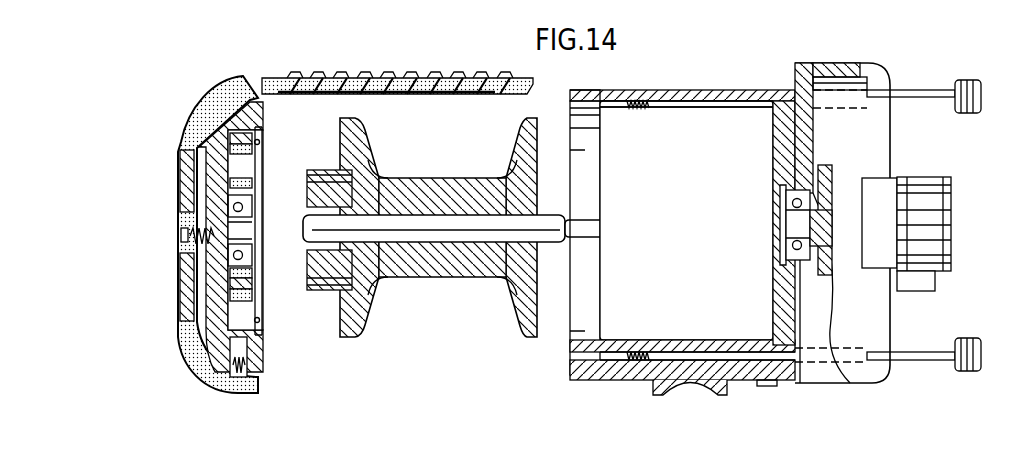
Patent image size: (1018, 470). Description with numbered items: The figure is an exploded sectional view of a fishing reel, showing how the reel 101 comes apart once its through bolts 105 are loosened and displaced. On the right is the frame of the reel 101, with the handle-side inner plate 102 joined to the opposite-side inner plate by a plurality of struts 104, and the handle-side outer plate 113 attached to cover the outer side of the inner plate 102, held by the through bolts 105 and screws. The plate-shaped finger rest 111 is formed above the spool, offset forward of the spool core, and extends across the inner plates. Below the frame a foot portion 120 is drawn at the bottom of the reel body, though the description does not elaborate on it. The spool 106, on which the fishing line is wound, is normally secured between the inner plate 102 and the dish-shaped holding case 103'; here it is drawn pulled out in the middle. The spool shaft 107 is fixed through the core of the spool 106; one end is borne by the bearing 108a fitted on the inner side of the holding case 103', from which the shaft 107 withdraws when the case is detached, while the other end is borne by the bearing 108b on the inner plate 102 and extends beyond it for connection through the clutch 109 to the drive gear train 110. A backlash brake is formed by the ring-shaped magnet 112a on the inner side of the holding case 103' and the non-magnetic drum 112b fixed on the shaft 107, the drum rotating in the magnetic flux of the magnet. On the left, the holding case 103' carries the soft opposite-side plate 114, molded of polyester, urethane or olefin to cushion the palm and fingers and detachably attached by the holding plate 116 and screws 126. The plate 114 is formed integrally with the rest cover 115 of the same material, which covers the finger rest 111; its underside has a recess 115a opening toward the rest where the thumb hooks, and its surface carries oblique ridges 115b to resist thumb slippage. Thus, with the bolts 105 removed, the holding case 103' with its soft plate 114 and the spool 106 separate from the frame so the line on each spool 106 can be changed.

The reel 101 is at (695, 91).
The handle-side inner plate 102 is at (795, 146).
The dish-shaped holding case 103' is at (183, 239).
The struts 104 is at (764, 380).
The through bolts 105 is at (708, 110).
The spool 106 is at (463, 260).
The spool shaft 107 is at (411, 232).
The bearing 108a is at (240, 257).
The bearing 108b is at (790, 205).
The clutch 109 is at (794, 240).
The drive gear train 110 is at (836, 200).
The finger rest 111 is at (632, 90).
The magnet 112a is at (257, 329).
The non-magnetic drum 112b is at (312, 168).
The handle-side outer plate 113 is at (848, 187).
The opposite-side plate 114 is at (193, 124).
The rest cover 115 is at (397, 74).
The recess 115a is at (430, 96).
The oblique ridges 115b is at (296, 74).
The holding plate 116 is at (182, 168).
The foot 120 is at (690, 383).
The screws 126 is at (185, 236).